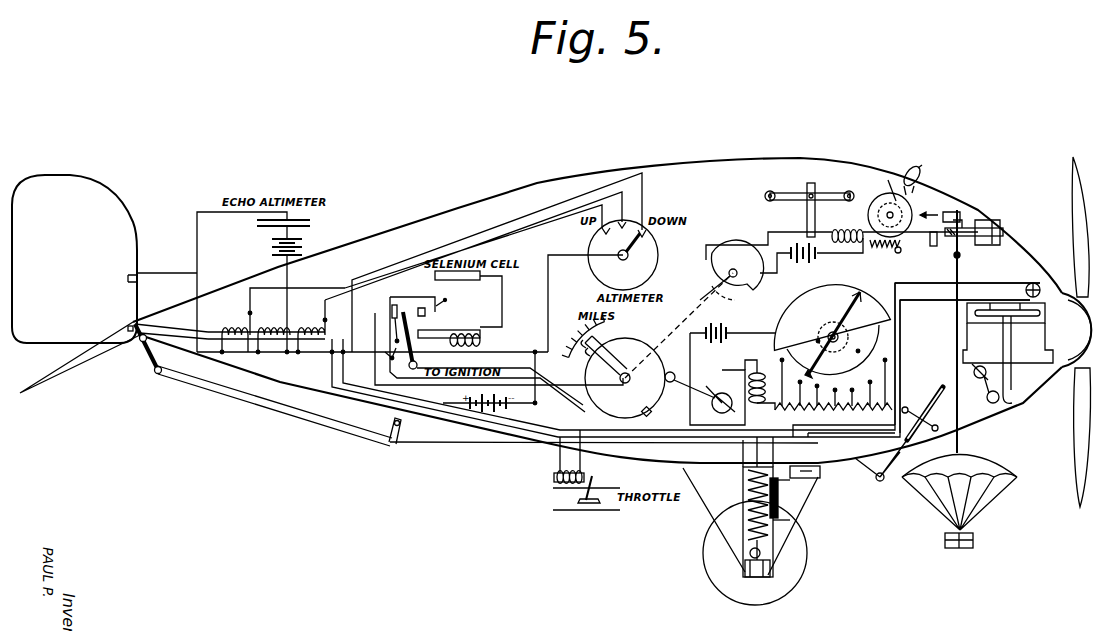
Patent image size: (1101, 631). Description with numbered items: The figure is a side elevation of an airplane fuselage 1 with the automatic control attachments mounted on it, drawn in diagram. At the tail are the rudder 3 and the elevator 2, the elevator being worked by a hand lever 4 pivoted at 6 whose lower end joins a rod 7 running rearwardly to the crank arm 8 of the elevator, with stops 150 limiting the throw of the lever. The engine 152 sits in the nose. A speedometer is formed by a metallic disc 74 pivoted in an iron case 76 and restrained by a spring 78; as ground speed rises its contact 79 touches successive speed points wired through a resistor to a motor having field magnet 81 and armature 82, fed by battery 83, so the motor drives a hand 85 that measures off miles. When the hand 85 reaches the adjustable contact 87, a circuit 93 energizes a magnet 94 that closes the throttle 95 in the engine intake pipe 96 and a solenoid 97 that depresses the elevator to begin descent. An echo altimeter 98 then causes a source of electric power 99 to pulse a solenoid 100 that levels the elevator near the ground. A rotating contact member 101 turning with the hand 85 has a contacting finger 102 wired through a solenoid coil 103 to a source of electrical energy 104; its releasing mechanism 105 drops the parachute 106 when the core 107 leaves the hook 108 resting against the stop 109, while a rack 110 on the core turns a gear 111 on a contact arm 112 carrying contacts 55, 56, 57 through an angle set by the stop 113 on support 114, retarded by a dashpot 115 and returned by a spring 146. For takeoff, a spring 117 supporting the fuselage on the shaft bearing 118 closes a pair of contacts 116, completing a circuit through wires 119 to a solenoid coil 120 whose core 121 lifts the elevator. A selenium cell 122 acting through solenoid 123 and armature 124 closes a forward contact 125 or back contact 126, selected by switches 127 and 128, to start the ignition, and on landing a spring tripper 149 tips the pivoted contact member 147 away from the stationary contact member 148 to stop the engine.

The airplane fuselage 1 is at (537, 183).
The elevator 2 is at (68, 374).
The rudder 3 is at (74, 259).
The hand lever 4 is at (938, 390).
The pivot 6 is at (880, 482).
The rod 7 is at (432, 443).
The crank arm 8 is at (143, 356).
The contact 55 is at (906, 193).
The contact 56 is at (920, 180).
The contact 57 is at (912, 201).
The metallic disc 74 is at (896, 338).
The case 76 is at (832, 330).
The spring 78 is at (820, 336).
The contact 79 is at (860, 384).
The field magnet 81 is at (760, 382).
The armature 82 is at (732, 413).
The battery 83 is at (732, 374).
The hand 85 is at (652, 412).
The adjustable contact 87 is at (596, 343).
The circuit 93 is at (554, 470).
The magnet 94 is at (553, 480).
The throttle 95 is at (594, 479).
The engine intake pipe 96 is at (568, 510).
The solenoid 97 is at (232, 331).
The echo altimeter 98 is at (296, 220).
The source of electric power 99 is at (270, 247).
The solenoid 100 is at (268, 325).
The rotating contact member 101 is at (740, 298).
The contacting finger 102 is at (752, 243).
The solenoid coil 103 is at (905, 223).
The source of electrical energy 104 is at (811, 261).
The releasing mechanism 105 is at (968, 224).
The parachute 106 is at (959, 500).
The core 107 is at (930, 240).
The hook 108 is at (965, 242).
The stop 109 is at (957, 210).
The rack 110 is at (896, 253).
The gear 111 is at (888, 180).
The contact arm 112 is at (922, 165).
The stop 113 is at (806, 218).
The support 114 is at (790, 192).
The dashpot 115 is at (1002, 231).
The pair of contacts 116 is at (772, 570).
The spring 117 is at (743, 540).
The shaft bearing 118 is at (782, 560).
The wires 119 is at (700, 492).
The solenoid coil 120 is at (312, 325).
The core 121 is at (287, 354).
The selenium cell 122 is at (470, 281).
The solenoid 123 is at (451, 327).
The armature 124 is at (411, 345).
The forward contact 125 is at (421, 307).
The back contact 126 is at (392, 312).
The switch 127 is at (446, 304).
The switch 128 is at (384, 350).
The spring 146 is at (872, 247).
The pivoted contact member 147 is at (795, 490).
The stationary contact member 148 is at (820, 472).
The spring tripper 149 is at (790, 520).
The stops 150 is at (937, 430).
The engine 152 is at (1025, 330).